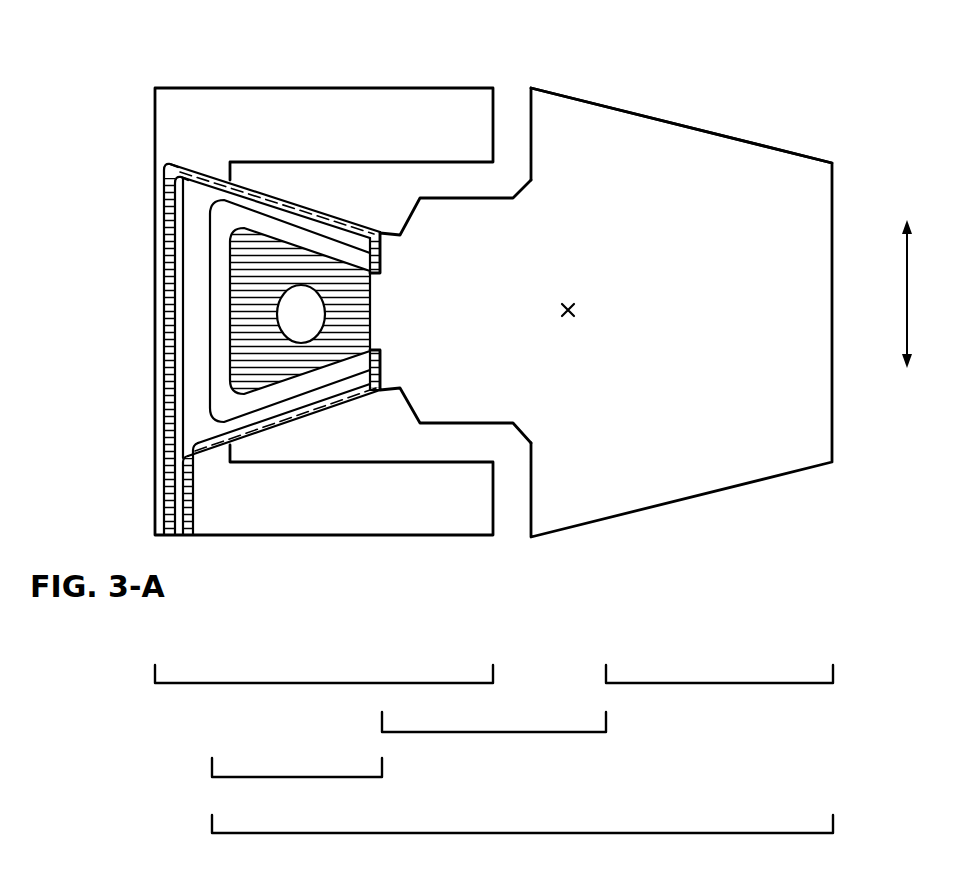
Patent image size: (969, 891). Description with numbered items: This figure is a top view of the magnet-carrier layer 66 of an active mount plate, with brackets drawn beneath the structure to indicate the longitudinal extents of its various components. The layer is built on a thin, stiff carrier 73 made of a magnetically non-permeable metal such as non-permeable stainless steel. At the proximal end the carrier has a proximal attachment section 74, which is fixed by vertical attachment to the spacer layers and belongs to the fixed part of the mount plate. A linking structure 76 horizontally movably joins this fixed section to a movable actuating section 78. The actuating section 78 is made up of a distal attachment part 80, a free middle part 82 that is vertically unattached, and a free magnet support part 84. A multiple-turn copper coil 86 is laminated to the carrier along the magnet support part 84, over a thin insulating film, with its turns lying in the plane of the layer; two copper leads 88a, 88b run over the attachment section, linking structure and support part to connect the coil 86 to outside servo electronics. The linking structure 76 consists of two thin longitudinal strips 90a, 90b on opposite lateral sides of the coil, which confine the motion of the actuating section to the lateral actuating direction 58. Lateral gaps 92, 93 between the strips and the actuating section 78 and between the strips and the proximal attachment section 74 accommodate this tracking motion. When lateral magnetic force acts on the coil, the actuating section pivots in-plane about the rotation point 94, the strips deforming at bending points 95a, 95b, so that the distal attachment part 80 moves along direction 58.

The actuating direction 58 is at (903, 313).
The magnet-carrier layer 66 is at (676, 64).
The carrier 73 is at (756, 142).
The proximal attachment section 74 is at (436, 125).
The linking structure 76 is at (340, 440).
The actuating section 78 is at (522, 836).
The distal attachment part 80 is at (788, 447).
The middle part 82 is at (527, 520).
The magnet support part 84 is at (212, 358).
The coil 86 is at (228, 268).
The copper lead 88a is at (166, 163).
The copper lead 88b is at (193, 503).
The strip 90a is at (320, 212).
The strip 90b is at (273, 432).
The lateral gap 92 is at (203, 183).
The lateral gap 93 is at (303, 180).
The rotation point 94 is at (578, 308).
The bending point 95a is at (374, 232).
The bending point 95b is at (373, 395).